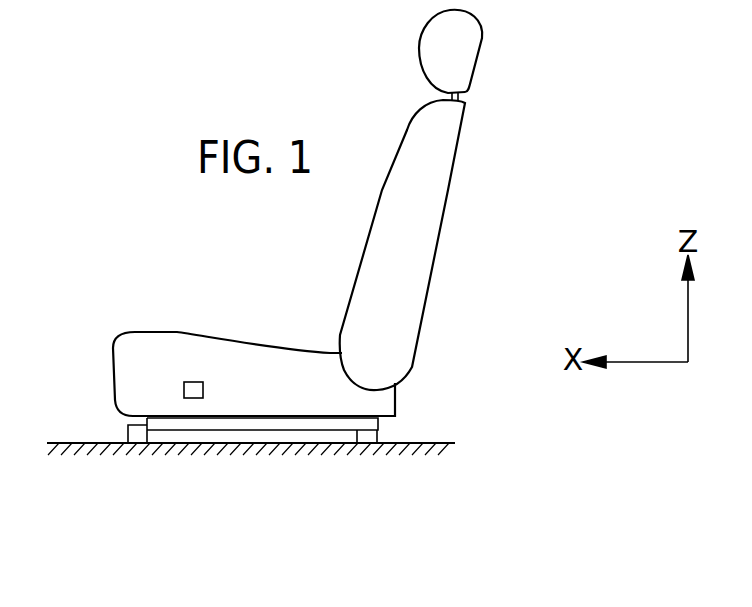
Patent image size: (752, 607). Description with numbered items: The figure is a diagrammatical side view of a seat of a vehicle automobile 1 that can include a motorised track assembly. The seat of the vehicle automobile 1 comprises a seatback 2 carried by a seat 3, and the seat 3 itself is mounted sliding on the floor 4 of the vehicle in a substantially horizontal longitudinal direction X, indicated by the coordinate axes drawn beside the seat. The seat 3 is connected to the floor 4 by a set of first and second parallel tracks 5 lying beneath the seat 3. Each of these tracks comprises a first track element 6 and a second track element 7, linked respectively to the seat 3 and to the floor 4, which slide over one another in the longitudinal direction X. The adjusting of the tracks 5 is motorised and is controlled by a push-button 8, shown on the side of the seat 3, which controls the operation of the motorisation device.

The vehicle automobile seat 1 is at (300, 322).
The seatback 2 is at (373, 245).
The seat 3 is at (148, 350).
The floor 4 is at (62, 443).
The first and second parallel tracks 5 is at (387, 428).
The first track element 6 is at (365, 423).
The second track element 7 is at (128, 427).
The push-button 8 is at (193, 397).